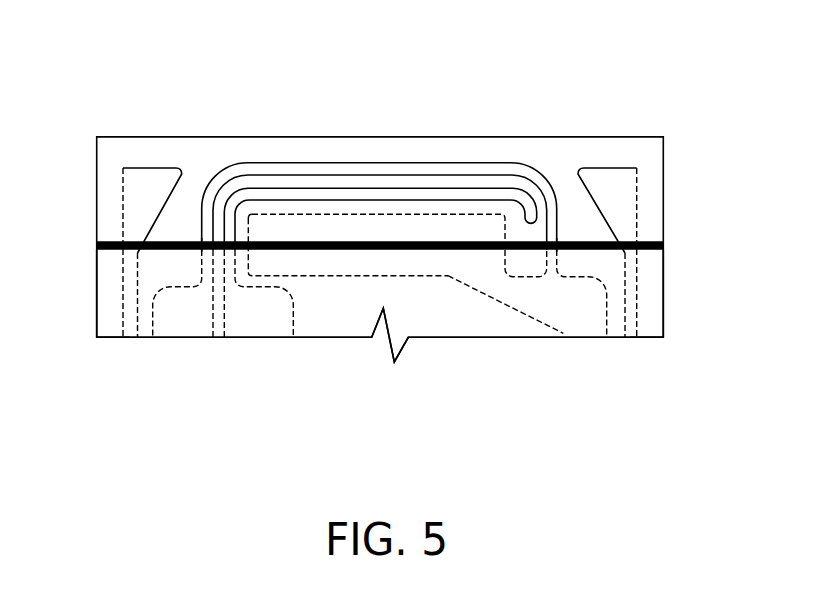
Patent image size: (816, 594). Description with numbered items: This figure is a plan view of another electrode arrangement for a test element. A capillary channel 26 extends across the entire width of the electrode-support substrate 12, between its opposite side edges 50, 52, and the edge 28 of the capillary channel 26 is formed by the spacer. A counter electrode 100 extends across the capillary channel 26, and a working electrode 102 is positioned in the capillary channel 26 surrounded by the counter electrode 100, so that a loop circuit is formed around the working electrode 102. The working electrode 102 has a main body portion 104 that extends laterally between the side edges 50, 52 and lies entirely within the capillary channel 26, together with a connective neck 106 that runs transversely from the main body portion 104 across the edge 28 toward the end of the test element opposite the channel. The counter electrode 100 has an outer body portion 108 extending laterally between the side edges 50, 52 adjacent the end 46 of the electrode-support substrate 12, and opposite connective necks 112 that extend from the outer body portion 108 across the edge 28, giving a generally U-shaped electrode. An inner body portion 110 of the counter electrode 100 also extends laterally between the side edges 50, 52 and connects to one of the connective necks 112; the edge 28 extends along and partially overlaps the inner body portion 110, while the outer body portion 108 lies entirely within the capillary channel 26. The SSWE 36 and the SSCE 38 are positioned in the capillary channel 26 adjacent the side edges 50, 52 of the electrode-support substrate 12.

The electrode-support substrate 12 is at (676, 288).
The capillary channel 26 is at (676, 125).
The edge of the capillary channel 28 is at (658, 250).
The SSWE 36 is at (142, 168).
The SSCE 38 is at (603, 168).
The end of the electrode-support substrate 46 is at (565, 136).
The side edge of the electrode-support substrate 50 is at (96, 335).
The side edge of the electrode-support substrate 52 is at (665, 328).
The counter electrode 100 is at (367, 144).
The working electrode 102 is at (452, 178).
The main body portion 104 is at (400, 186).
The connective neck 106 is at (225, 275).
The outer body portion 108 is at (281, 163).
The inner body portion 110 is at (350, 276).
The connective necks 112 is at (202, 228).